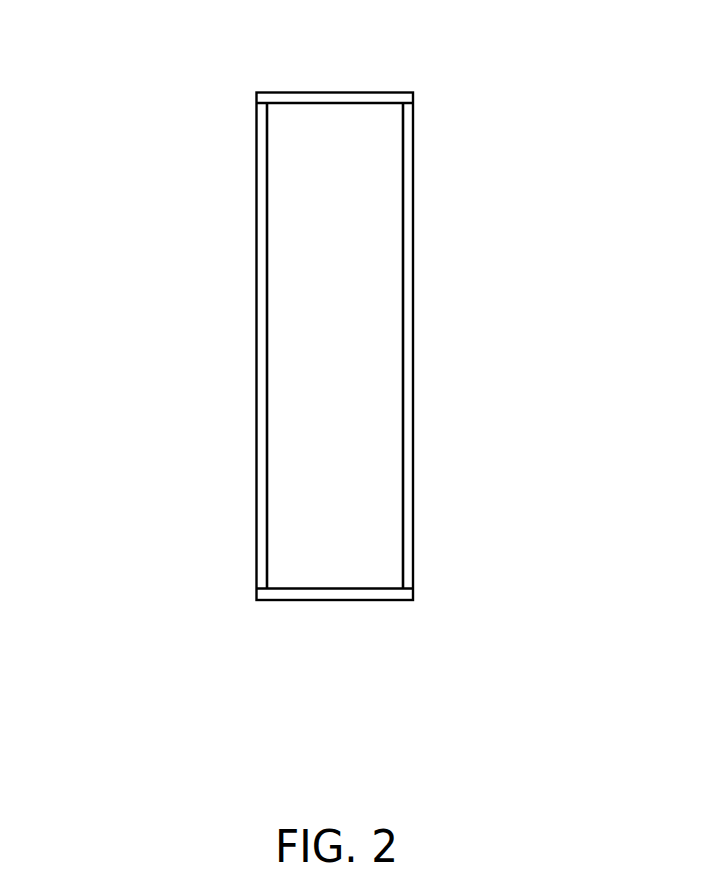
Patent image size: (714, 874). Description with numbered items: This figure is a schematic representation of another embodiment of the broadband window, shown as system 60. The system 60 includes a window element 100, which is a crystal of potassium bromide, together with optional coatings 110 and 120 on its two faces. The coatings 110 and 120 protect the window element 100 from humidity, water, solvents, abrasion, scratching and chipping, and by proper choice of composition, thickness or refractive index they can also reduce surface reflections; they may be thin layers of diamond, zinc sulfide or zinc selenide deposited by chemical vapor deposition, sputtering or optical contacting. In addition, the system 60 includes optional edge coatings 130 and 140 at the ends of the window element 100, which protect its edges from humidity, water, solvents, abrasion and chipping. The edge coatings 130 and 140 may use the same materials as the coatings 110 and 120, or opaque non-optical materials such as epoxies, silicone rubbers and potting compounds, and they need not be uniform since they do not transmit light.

The system 60 is at (205, 740).
The window element 100 is at (289, 392).
The coating 110 is at (413, 132).
The coating 120 is at (257, 133).
The edge coating 130 is at (335, 90).
The edge coating 140 is at (333, 602).